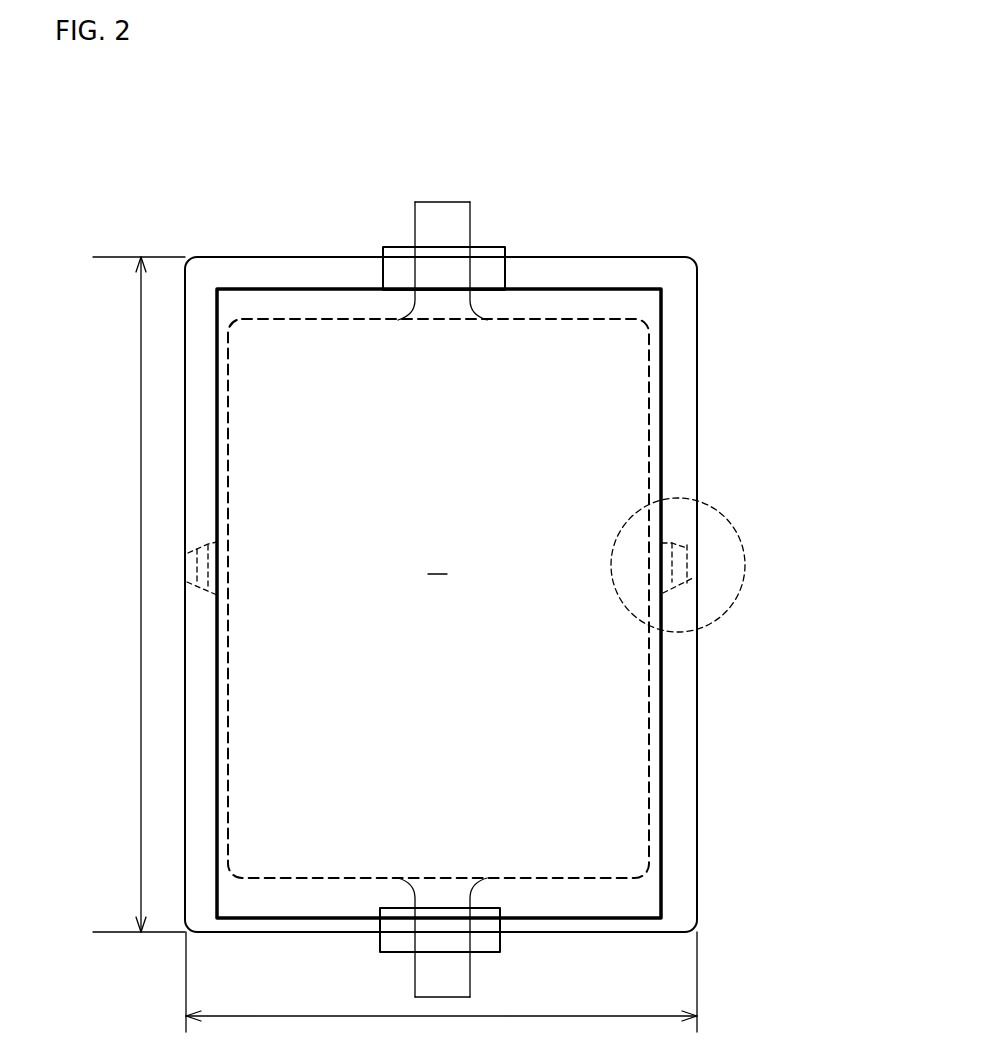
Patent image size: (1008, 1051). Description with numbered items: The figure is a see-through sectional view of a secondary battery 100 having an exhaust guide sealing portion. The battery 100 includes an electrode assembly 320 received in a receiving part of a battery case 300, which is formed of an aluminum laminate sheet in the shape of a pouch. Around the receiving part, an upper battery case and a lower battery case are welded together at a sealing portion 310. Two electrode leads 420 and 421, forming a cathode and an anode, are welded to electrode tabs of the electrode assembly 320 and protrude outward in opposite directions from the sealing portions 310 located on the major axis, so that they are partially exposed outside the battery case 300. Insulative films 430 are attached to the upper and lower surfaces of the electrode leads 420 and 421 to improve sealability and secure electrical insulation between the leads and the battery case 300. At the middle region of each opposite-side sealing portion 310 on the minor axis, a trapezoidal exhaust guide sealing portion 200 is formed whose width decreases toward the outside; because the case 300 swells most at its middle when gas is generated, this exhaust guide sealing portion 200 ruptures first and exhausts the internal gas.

The secondary battery 100 is at (100, 122).
The exhaust guide sealing portion 200 is at (697, 568).
The battery case 300 is at (645, 251).
The sealing portion 310 is at (672, 345).
The electrode assembly 320 is at (627, 435).
The electrode lead 420 is at (425, 222).
The electrode lead 421 is at (470, 993).
The insulative film 430 is at (490, 245).